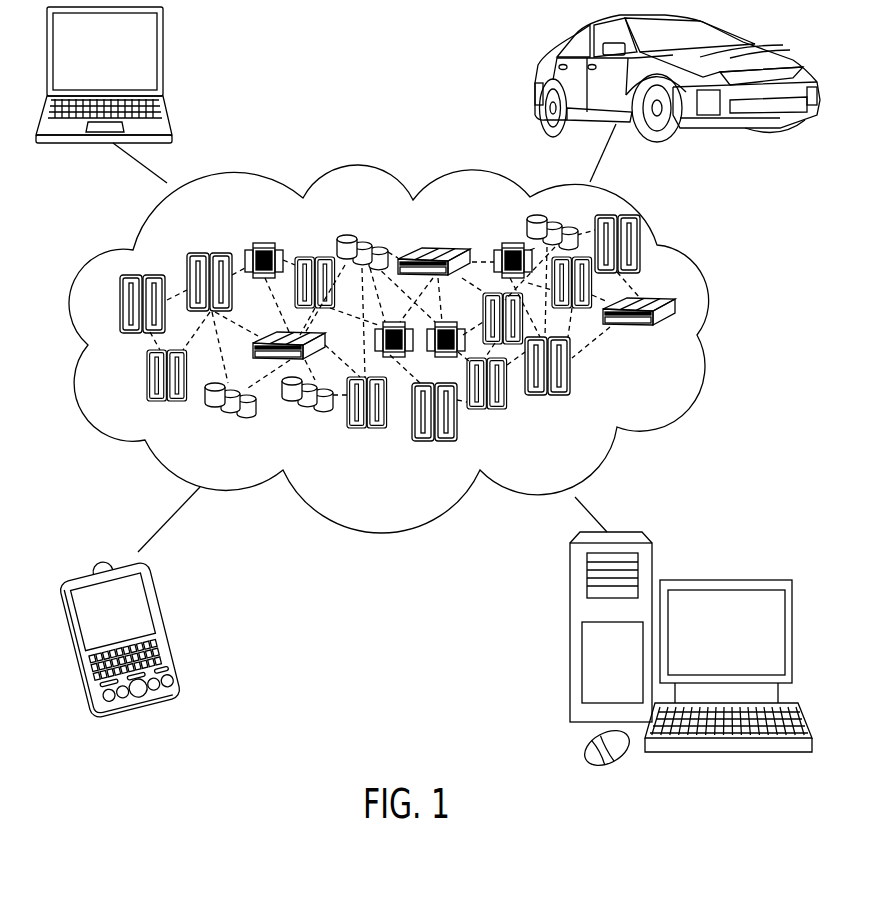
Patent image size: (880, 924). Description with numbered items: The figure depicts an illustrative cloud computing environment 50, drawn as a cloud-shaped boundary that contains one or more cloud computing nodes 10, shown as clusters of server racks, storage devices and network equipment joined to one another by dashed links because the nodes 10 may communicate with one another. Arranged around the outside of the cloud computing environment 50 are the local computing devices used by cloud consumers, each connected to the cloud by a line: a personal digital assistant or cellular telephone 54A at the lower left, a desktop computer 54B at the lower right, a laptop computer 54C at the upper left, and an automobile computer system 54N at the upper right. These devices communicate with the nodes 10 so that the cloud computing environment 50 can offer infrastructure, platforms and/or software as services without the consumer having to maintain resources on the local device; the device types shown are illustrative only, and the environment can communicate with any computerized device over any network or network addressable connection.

The cloud computing node 10 is at (668, 387).
The cloud computing environment 50 is at (707, 278).
The personal digital assistant or cellular telephone 54A is at (172, 630).
The desktop computer 54B is at (723, 580).
The laptop computer 54C is at (163, 58).
The automobile computer system 54N is at (540, 73).